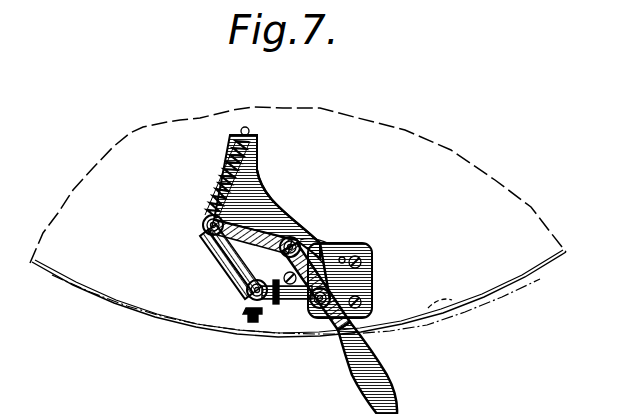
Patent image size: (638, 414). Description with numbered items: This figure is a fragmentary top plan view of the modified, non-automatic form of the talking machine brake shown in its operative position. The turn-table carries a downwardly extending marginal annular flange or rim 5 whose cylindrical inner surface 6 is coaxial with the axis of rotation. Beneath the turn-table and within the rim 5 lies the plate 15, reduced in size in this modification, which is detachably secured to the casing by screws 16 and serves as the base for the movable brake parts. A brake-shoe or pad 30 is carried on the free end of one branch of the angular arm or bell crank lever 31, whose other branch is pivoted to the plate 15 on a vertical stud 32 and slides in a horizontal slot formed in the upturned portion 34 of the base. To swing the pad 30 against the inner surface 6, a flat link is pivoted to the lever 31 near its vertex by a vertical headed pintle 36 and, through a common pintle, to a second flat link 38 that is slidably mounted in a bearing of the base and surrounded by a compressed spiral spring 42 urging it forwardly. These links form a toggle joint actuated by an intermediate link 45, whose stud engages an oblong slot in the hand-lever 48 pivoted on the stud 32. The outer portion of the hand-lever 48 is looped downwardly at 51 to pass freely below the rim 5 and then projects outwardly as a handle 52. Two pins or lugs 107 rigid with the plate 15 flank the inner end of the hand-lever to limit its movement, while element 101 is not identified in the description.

The marginal annular flange or rim 5 is at (186, 331).
The cylindrical inner surface 6 is at (207, 331).
The plate 15 is at (260, 257).
The screws 16 is at (240, 278).
The brake-shoe or pad 30 is at (251, 323).
The angular arm or bell crank lever 31 is at (300, 305).
The vertical stud 32 is at (373, 283).
The upturned portion 34 is at (277, 306).
The vertical headed pintle 36 is at (247, 292).
The flat link 38 is at (258, 178).
The compressed spiral spring 42 is at (223, 170).
The intermediate link 45 is at (268, 237).
The hand-lever 48 is at (322, 286).
The downwardly looped portion 51 is at (360, 336).
The handle 52 is at (391, 380).
The member 101 is at (310, 256).
The pins or lugs 107 is at (345, 259).